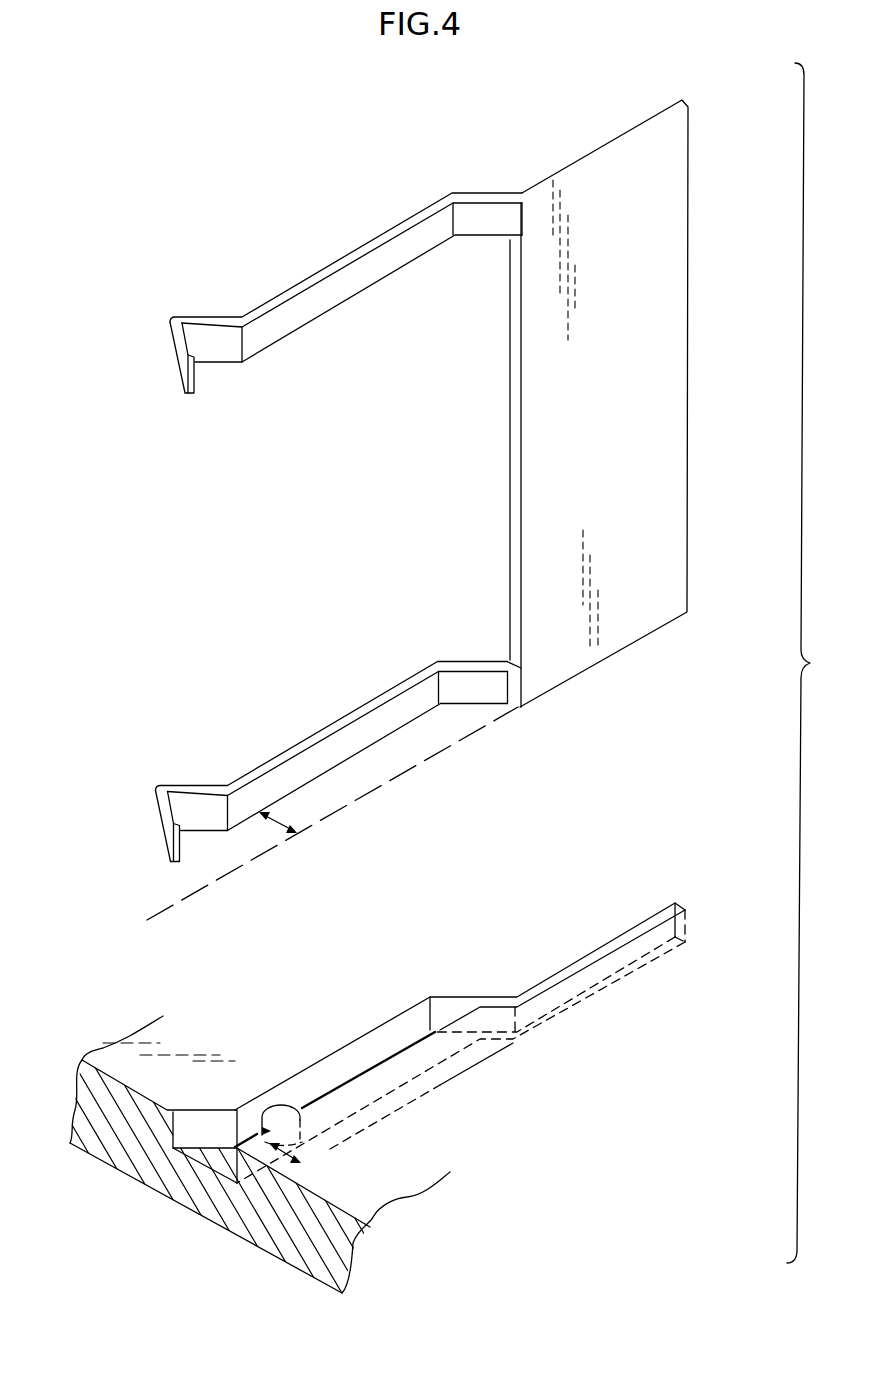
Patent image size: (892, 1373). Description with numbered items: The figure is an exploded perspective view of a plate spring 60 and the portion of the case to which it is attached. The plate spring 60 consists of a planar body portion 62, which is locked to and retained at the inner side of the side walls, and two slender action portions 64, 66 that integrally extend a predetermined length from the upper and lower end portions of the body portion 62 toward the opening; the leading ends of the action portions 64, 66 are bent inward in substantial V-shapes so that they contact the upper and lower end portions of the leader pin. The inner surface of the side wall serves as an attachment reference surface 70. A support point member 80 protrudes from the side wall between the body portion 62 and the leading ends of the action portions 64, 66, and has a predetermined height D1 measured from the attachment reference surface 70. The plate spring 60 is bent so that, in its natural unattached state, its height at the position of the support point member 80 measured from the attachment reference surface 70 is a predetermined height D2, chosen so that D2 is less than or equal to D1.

The plate spring 60 is at (459, 463).
The body portion 62 is at (633, 373).
The action portion 64 is at (345, 285).
The action portion 66 is at (313, 765).
The attachment reference surface 70 is at (596, 958).
The support point member 80 is at (280, 1105).
The height of support point member D1 is at (262, 1143).
The natural-state height of plate spring D2 is at (288, 831).